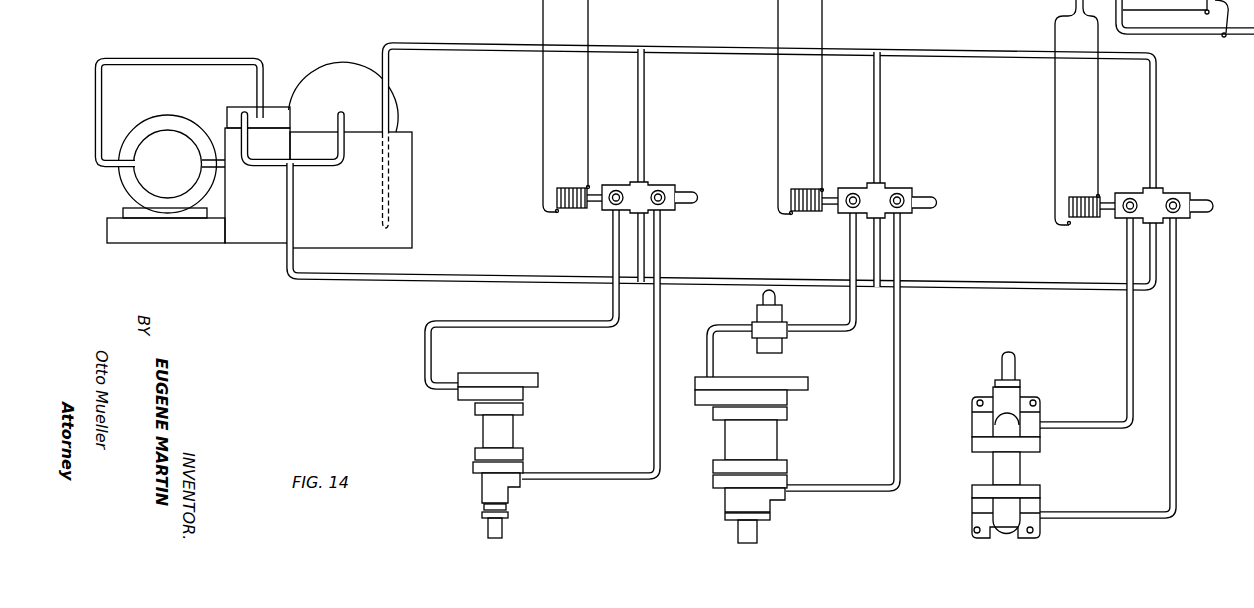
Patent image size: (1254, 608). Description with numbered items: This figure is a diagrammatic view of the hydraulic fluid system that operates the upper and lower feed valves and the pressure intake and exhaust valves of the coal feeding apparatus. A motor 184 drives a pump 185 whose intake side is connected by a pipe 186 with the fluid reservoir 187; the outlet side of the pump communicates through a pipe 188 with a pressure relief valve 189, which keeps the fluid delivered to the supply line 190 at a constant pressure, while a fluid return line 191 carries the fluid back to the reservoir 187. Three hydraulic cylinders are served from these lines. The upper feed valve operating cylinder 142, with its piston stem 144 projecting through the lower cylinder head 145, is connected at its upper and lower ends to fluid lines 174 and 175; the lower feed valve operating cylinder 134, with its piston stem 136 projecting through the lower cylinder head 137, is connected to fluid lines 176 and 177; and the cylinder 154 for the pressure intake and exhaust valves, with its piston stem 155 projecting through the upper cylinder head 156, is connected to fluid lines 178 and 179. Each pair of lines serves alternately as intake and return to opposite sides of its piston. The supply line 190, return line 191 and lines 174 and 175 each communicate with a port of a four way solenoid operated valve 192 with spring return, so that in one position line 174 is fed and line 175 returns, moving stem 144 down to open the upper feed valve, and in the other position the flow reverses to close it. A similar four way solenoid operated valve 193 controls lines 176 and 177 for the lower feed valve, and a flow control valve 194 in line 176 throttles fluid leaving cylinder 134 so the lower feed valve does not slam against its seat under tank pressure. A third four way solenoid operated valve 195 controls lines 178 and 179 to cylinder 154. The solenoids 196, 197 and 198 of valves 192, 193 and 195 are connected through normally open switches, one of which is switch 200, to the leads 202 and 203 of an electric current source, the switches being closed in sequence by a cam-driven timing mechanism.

The hydraulic fluid cylinder 134 is at (778, 441).
The piston stem 136 is at (737, 537).
The lower cylinder head 137 is at (771, 521).
The cylinder 142 is at (514, 434).
The piston stem 144 is at (486, 535).
The lower cylinder head 145 is at (509, 515).
The hydraulic fluid cylinder 154 is at (1021, 470).
The piston stem 155 is at (1016, 365).
The upper cylinder head 156 is at (994, 383).
The fluid line 174 is at (549, 328).
The fluid line 175 is at (615, 472).
The fluid line 176 is at (815, 332).
The fluid line 177 is at (862, 492).
The fluid line 178 is at (1126, 335).
The fluid line 179 is at (1133, 512).
The motor 184 is at (167, 114).
The pump 185 is at (135, 181).
The pipe 186 is at (227, 180).
The fluid reservoir 187 is at (255, 247).
The pipe 188 is at (118, 57).
The pressure relief valve 189 is at (237, 107).
The supply line 190 is at (457, 276).
The fluid return line 191 is at (502, 50).
The four way solenoid operated valve 192 is at (661, 186).
The four way solenoid operated valve 193 is at (905, 188).
The flow control valve 194 is at (756, 312).
The four way solenoid operated valve 195 is at (1178, 193).
The solenoid 196 is at (587, 213).
The solenoid 197 is at (822, 216).
The solenoid 198 is at (1098, 219).
The normally open switch 200 is at (1046, 2).
The lead 202 is at (1183, 14).
The lead 203 is at (1228, 40).